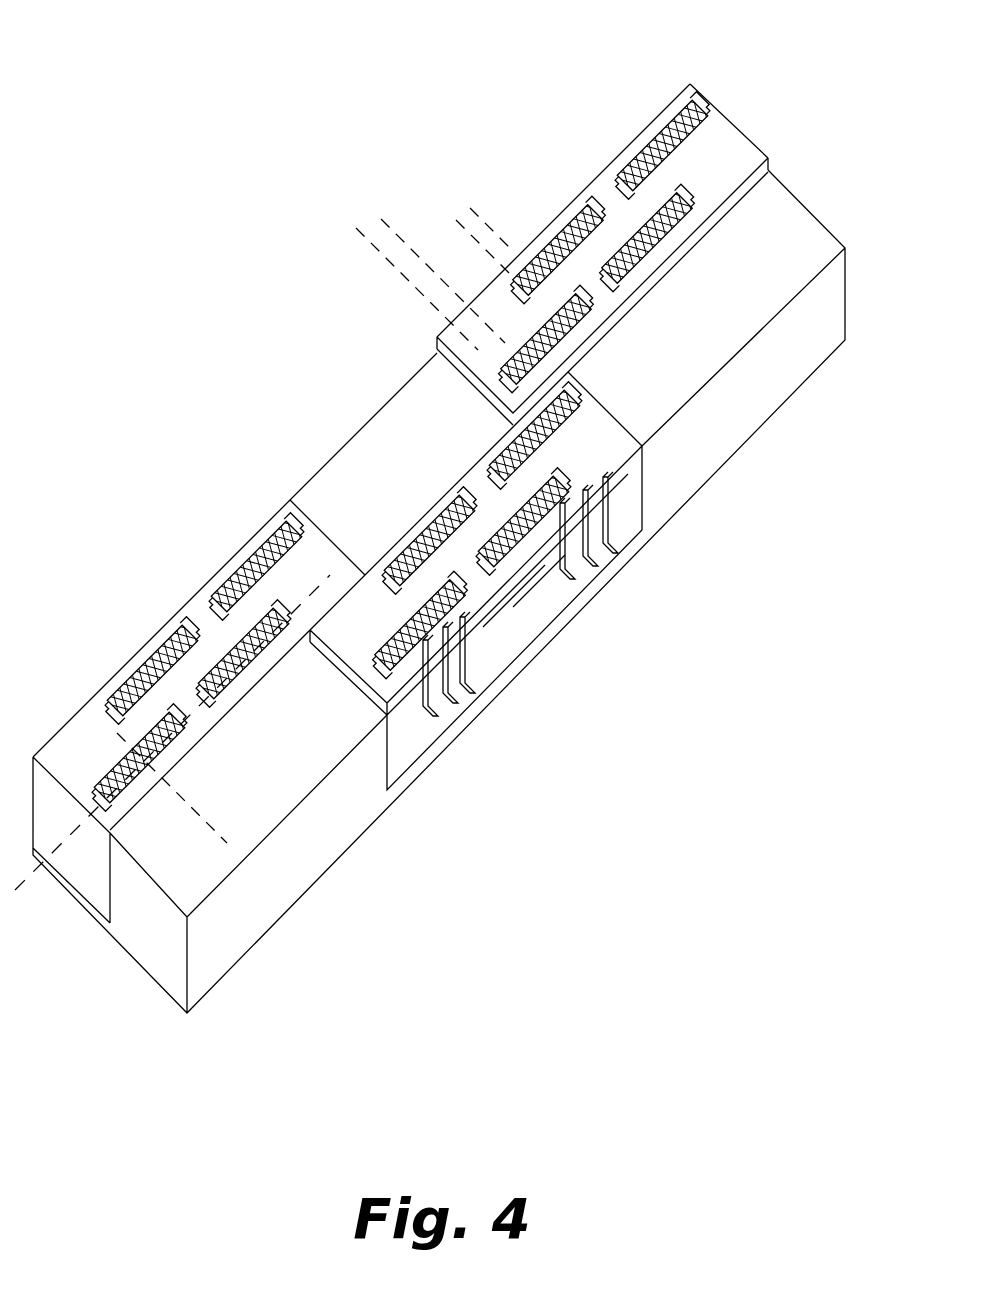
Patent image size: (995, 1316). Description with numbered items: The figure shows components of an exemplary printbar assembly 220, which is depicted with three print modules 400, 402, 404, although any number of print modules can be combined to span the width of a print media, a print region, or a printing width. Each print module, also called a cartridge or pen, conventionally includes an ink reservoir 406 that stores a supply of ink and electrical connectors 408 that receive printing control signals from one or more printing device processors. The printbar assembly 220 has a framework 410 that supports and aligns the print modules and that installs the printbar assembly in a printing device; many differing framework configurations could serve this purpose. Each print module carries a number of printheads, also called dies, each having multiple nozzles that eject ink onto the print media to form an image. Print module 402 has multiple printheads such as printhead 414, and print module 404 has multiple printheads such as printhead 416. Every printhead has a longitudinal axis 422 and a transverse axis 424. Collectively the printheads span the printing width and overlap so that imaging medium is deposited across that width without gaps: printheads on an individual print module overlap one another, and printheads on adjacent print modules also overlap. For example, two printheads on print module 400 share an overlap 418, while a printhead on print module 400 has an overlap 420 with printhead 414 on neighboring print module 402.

The printbar assembly 220 is at (336, 70).
The print module 400 is at (623, 243).
The print module 402 is at (470, 577).
The print module 404 is at (187, 660).
The ink reservoir 406 is at (503, 620).
The electrical connectors 408 is at (587, 572).
The framework 410 is at (733, 457).
The printhead 414 is at (500, 447).
The printhead 416 is at (250, 560).
The overlap 418 is at (444, 263).
The overlap 420 is at (420, 193).
The longitudinal axis 422 is at (78, 832).
The transverse axis 424 is at (195, 805).